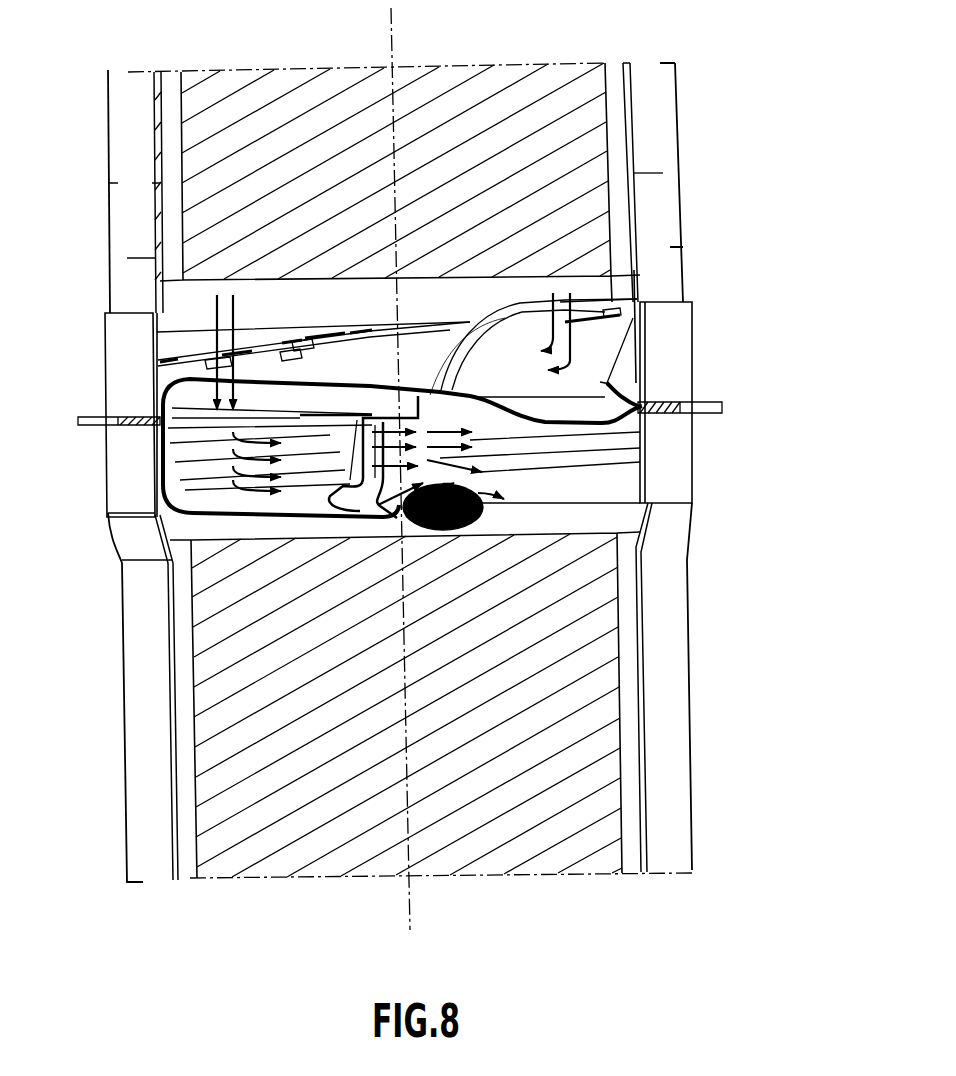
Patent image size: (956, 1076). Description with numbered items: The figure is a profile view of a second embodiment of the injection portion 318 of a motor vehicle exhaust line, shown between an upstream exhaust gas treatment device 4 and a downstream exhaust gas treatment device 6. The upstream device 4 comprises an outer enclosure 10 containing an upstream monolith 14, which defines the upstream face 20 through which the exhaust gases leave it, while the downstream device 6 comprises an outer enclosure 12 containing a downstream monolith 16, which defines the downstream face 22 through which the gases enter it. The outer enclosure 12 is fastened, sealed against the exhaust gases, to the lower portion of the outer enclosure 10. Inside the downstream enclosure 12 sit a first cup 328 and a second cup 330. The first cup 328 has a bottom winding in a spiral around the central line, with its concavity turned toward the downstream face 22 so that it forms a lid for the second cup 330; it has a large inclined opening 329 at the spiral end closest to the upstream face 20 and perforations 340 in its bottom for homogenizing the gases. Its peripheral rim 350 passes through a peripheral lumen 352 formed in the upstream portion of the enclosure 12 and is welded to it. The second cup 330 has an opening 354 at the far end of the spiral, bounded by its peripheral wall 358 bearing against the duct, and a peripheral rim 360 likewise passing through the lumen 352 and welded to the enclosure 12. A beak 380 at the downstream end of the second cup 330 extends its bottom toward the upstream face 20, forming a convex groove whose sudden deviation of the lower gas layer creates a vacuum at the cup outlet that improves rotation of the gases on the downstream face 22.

The upstream exhaust gas treatment device 4 is at (747, 85).
The downstream exhaust gas treatment device 6 is at (741, 565).
The outer enclosure of upstream device 10 is at (634, 188).
The outer enclosure of downstream device 12 is at (641, 610).
The upstream monolith 14 is at (630, 138).
The downstream monolith 16 is at (626, 662).
The upstream face 20 is at (286, 278).
The downstream face 22 is at (550, 537).
The injection portion 318 is at (713, 377).
The first cup 328 is at (185, 388).
The opening of first cup 329 is at (473, 335).
The second cup 330 is at (217, 515).
The perforations 340 is at (318, 337).
The peripheral rim of first cup 350 is at (125, 417).
The peripheral lumen 352 is at (157, 413).
The opening of second cup 354 is at (448, 412).
The peripheral wall of second cup 358 is at (162, 467).
The peripheral rim of second cup 360 is at (162, 438).
The beak 380 is at (390, 527).